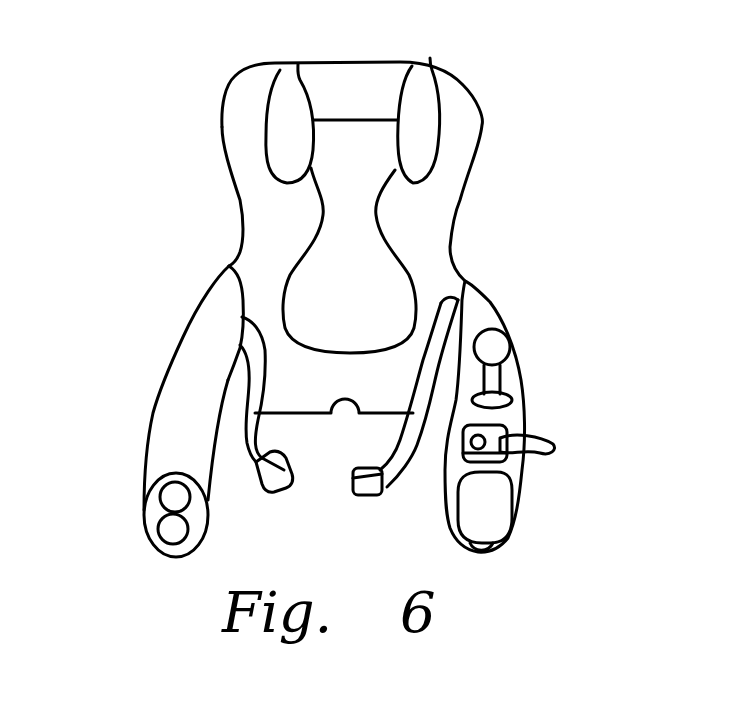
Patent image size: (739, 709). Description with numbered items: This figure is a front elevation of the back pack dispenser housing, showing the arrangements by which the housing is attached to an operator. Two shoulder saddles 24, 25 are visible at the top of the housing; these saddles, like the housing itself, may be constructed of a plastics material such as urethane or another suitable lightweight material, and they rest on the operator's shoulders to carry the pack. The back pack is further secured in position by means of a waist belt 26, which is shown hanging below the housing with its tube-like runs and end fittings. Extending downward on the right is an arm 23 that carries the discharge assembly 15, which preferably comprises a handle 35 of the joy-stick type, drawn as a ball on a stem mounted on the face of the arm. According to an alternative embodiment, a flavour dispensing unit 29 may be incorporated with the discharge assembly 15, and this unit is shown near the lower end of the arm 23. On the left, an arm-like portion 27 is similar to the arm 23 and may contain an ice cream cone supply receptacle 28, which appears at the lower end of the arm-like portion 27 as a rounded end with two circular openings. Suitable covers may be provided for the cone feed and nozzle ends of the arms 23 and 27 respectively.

The discharge assembly 15 is at (546, 498).
The arm 23 is at (510, 377).
The shoulder saddle 24 is at (295, 77).
The shoulder saddle 25 is at (418, 92).
The waist belt 26 is at (355, 482).
The arm-like portion 27 is at (153, 408).
The ice cream cone supply receptacle 28 is at (168, 497).
The flavour dispensing unit 29 is at (450, 488).
The handle 35 is at (497, 343).